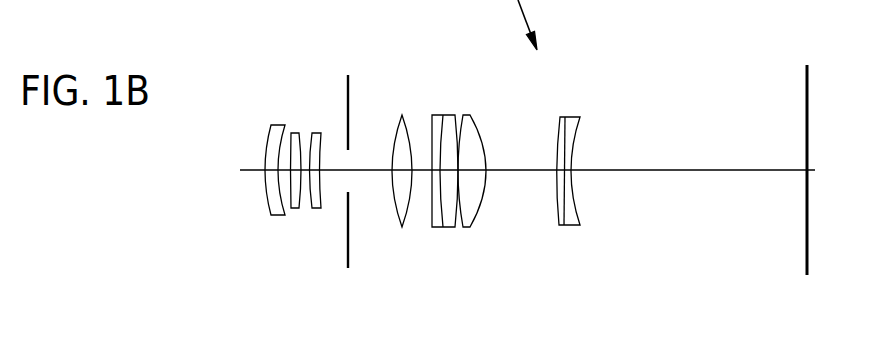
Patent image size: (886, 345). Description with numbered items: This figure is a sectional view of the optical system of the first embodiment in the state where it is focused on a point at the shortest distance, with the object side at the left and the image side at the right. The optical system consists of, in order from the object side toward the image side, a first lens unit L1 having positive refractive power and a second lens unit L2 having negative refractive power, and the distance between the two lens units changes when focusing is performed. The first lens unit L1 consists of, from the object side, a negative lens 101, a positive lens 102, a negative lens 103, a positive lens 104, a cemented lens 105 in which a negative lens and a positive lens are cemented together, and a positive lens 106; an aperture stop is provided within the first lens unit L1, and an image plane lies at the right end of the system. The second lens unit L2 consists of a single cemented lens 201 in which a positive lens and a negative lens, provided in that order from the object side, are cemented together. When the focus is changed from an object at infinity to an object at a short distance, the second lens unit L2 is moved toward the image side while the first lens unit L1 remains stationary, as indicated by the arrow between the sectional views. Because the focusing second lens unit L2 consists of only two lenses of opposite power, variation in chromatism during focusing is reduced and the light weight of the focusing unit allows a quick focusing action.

The negative lens 101 is at (272, 125).
The positive lens 102 is at (294, 133).
The negative lens 103 is at (316, 132).
The positive lens 104 is at (402, 115).
The cemented lens 105 is at (425, 108).
The positive lens 106 is at (464, 115).
The cemented lens 201 is at (585, 108).
The first lens unit L1 is at (355, 180).
The second lens unit L2 is at (571, 199).